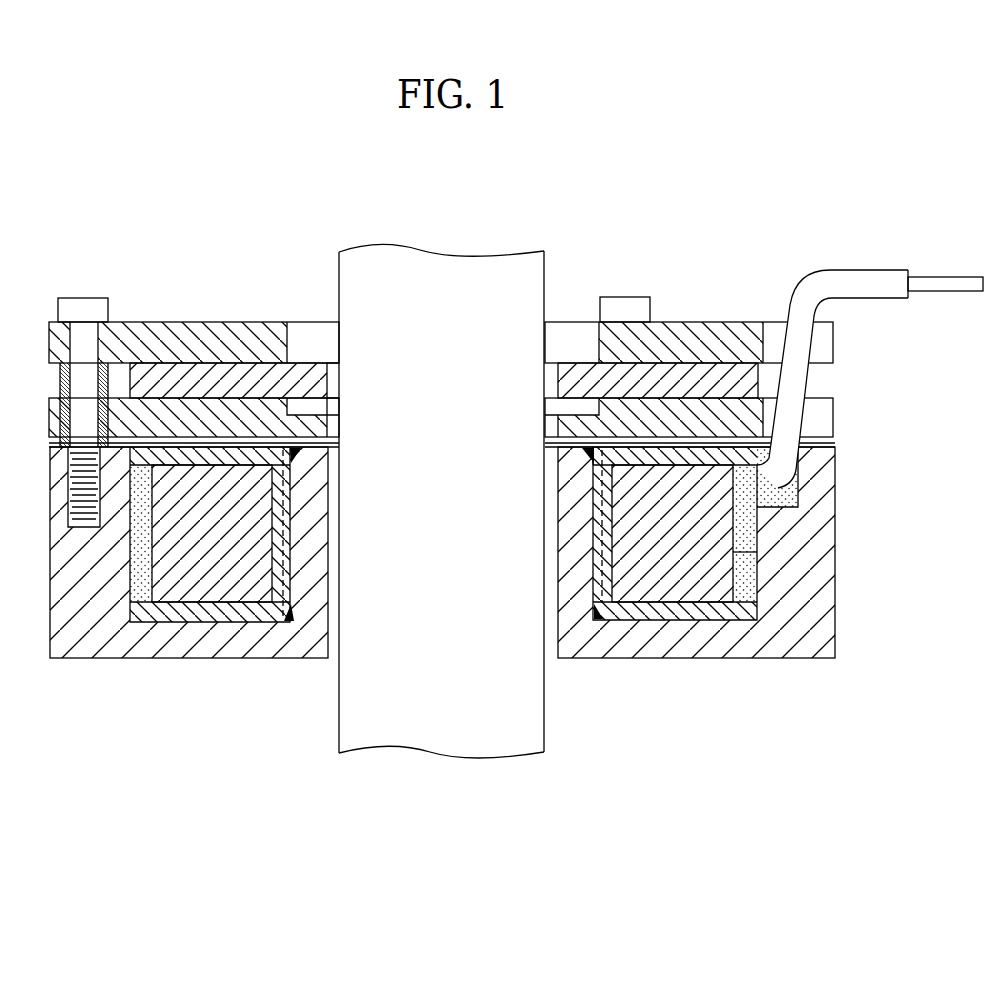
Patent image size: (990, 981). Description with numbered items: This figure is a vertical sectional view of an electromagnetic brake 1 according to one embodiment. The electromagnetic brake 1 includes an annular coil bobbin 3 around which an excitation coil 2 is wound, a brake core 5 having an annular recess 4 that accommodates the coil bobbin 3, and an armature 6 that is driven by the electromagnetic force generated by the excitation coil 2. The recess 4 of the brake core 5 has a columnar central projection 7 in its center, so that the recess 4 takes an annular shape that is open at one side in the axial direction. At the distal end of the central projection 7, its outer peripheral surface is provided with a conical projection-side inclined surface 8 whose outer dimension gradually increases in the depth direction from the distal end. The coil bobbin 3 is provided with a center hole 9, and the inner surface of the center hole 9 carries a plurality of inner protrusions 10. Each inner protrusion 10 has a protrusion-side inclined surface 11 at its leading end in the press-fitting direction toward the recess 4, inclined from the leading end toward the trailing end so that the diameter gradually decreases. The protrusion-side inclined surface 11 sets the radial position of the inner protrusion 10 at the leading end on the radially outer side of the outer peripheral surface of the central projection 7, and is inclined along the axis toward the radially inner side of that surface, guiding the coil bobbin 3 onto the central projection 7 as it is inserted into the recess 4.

The electromagnetic brake 1 is at (705, 165).
The excitation coil 2 is at (745, 552).
The coil bobbin 3 is at (628, 570).
The annular recess 4 is at (702, 607).
The brake core 5 is at (840, 514).
The armature 6 is at (855, 405).
The central projection 7 is at (545, 481).
The projection-side inclined surface 8 is at (595, 457).
The center hole 9 is at (290, 497).
The inner protrusion 10 is at (290, 560).
The protrusion-side inclined surface 11 is at (291, 616).